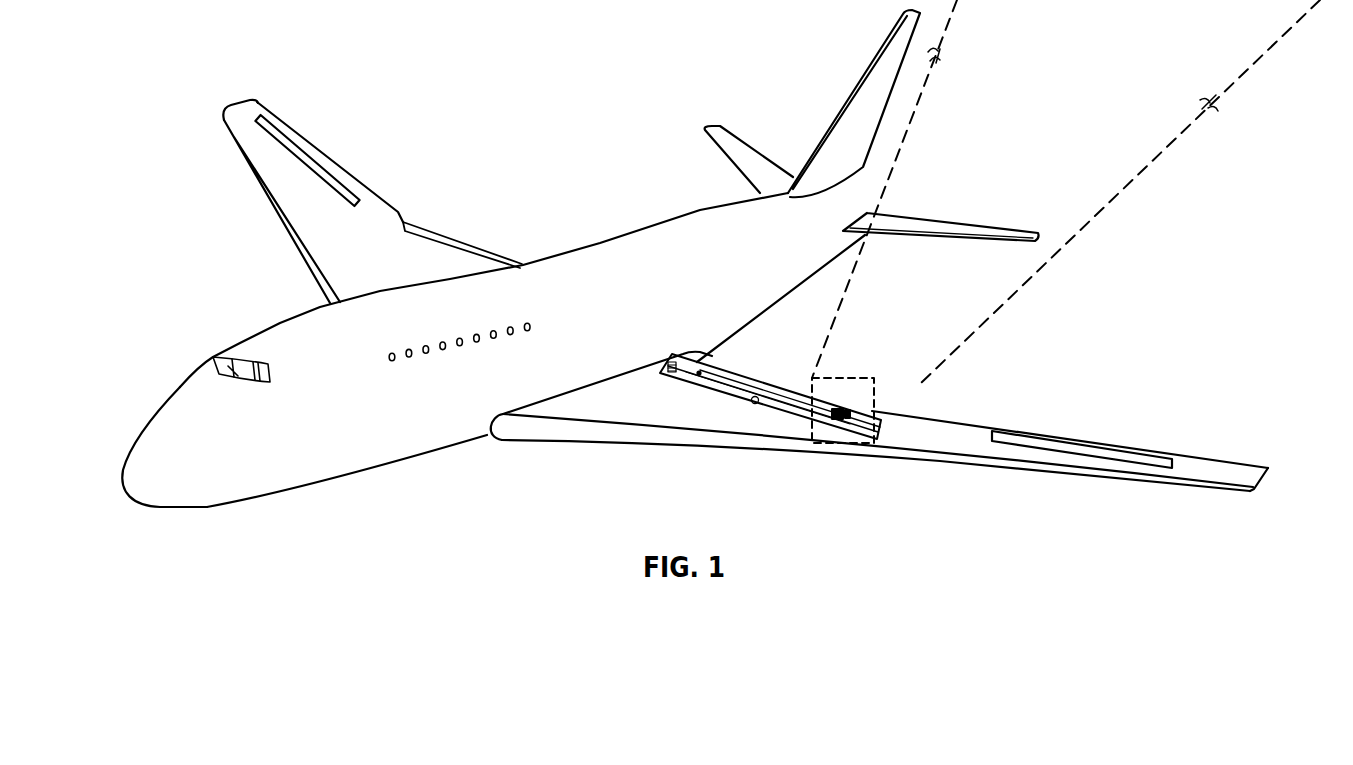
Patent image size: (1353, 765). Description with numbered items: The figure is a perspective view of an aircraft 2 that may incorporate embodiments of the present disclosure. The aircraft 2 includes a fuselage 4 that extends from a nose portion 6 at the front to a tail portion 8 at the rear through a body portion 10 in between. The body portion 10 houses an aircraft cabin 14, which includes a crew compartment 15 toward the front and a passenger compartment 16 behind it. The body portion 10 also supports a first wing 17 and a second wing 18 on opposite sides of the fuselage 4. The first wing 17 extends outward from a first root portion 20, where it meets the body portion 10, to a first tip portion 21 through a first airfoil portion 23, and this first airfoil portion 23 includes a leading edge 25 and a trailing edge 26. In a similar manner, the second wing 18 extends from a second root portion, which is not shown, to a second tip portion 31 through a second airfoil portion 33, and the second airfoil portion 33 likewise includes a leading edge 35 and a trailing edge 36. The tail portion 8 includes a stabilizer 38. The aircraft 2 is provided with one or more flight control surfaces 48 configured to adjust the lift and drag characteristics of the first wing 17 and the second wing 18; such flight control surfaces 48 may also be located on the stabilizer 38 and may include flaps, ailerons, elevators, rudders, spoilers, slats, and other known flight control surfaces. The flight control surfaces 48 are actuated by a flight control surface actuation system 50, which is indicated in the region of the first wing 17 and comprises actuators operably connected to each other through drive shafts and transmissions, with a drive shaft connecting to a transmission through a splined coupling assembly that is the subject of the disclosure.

The aircraft 2 is at (118, 330).
The fuselage 4 is at (278, 481).
The nose portion 6 is at (132, 483).
The tail portion 8 is at (840, 248).
The body portion 10 is at (797, 408).
The aircraft cabin 14 is at (910, 268).
The crew compartment 15 is at (213, 356).
The passenger compartment 16 is at (532, 278).
The first wing 17 is at (898, 465).
The second wing 18 is at (307, 127).
The first root portion 20 is at (592, 383).
The first tip portion 21 is at (1267, 477).
The first airfoil portion 23 is at (800, 435).
The leading edge 25 is at (703, 437).
The trailing edge 26 is at (923, 416).
The second tip portion 31 is at (233, 103).
The second airfoil portion 33 is at (300, 153).
The leading edge 35 is at (236, 137).
The trailing edge 36 is at (285, 175).
The stabilizer 38 is at (917, 208).
The flight control surfaces 48 is at (1070, 445).
The flight control surface actuation system 50 is at (872, 370).